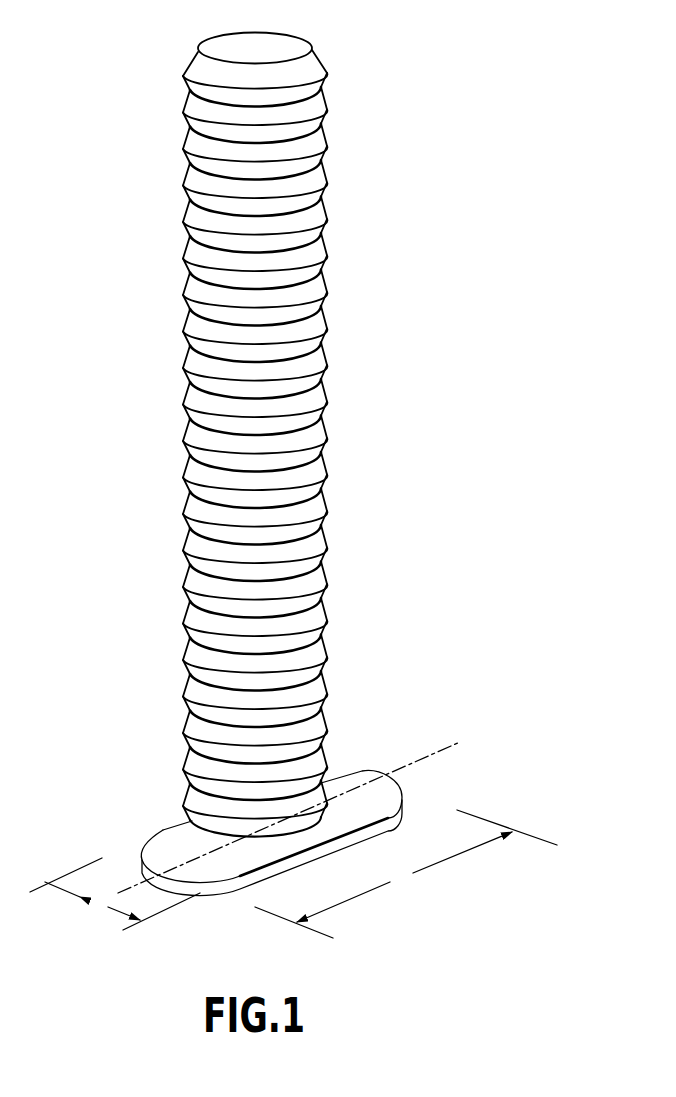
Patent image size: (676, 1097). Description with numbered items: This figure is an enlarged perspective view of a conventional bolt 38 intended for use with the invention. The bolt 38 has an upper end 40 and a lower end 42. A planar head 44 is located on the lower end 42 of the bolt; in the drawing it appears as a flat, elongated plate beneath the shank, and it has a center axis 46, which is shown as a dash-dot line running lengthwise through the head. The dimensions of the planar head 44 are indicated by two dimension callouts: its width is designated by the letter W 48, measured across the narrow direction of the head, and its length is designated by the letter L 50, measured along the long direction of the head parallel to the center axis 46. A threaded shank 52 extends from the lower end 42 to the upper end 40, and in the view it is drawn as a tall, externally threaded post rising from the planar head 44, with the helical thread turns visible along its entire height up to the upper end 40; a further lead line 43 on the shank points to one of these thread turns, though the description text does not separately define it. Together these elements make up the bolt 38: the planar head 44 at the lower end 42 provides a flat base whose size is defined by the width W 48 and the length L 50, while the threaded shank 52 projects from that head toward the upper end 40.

The bolt 38 is at (293, 486).
The upper end 40 is at (317, 52).
The lower end 42 is at (192, 821).
The threaded post 43 is at (289, 417).
The planar head 44 is at (293, 829).
The center axis 46 is at (422, 762).
The width W 48 is at (80, 911).
The length L 50 is at (407, 893).
The threaded shank 52 is at (323, 207).